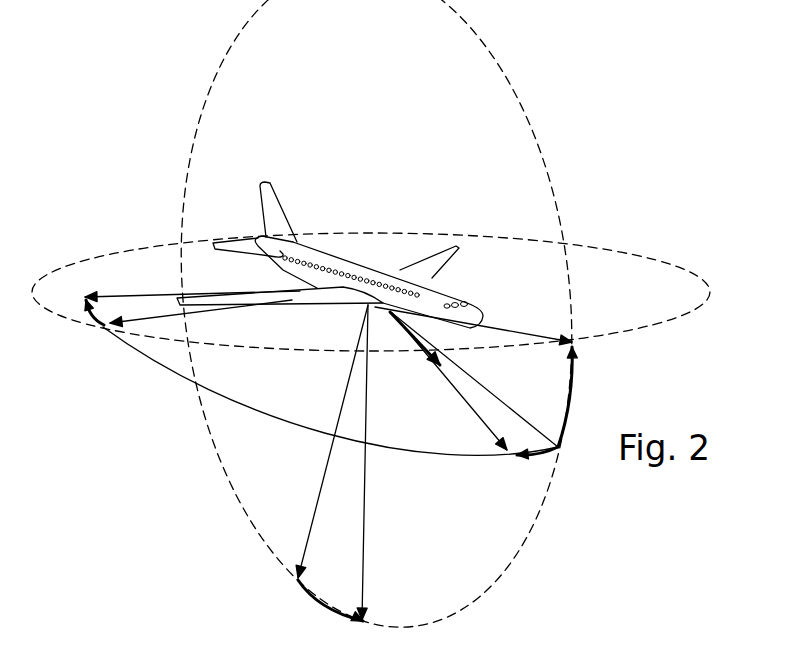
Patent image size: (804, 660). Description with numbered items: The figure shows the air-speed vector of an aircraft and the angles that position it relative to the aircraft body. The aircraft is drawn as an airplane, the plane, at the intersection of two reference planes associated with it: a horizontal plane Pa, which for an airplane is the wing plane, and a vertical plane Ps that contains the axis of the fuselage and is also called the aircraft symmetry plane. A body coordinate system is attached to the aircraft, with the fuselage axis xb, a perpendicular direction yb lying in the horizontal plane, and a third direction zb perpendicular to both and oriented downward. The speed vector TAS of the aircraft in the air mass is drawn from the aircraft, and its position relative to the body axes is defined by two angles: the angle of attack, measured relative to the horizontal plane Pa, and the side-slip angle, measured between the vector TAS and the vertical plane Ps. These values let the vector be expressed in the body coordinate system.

The vertical plane Ps is at (490, 55).
The horizontal plane Pa is at (630, 253).
The aircraft plane is at (330, 255).
The lateral body axis Yb is at (321, 359).
The fuselage axis xb is at (473, 326).
The downward body axis Zb is at (345, 463).
The air-speed vector TAS is at (436, 380).